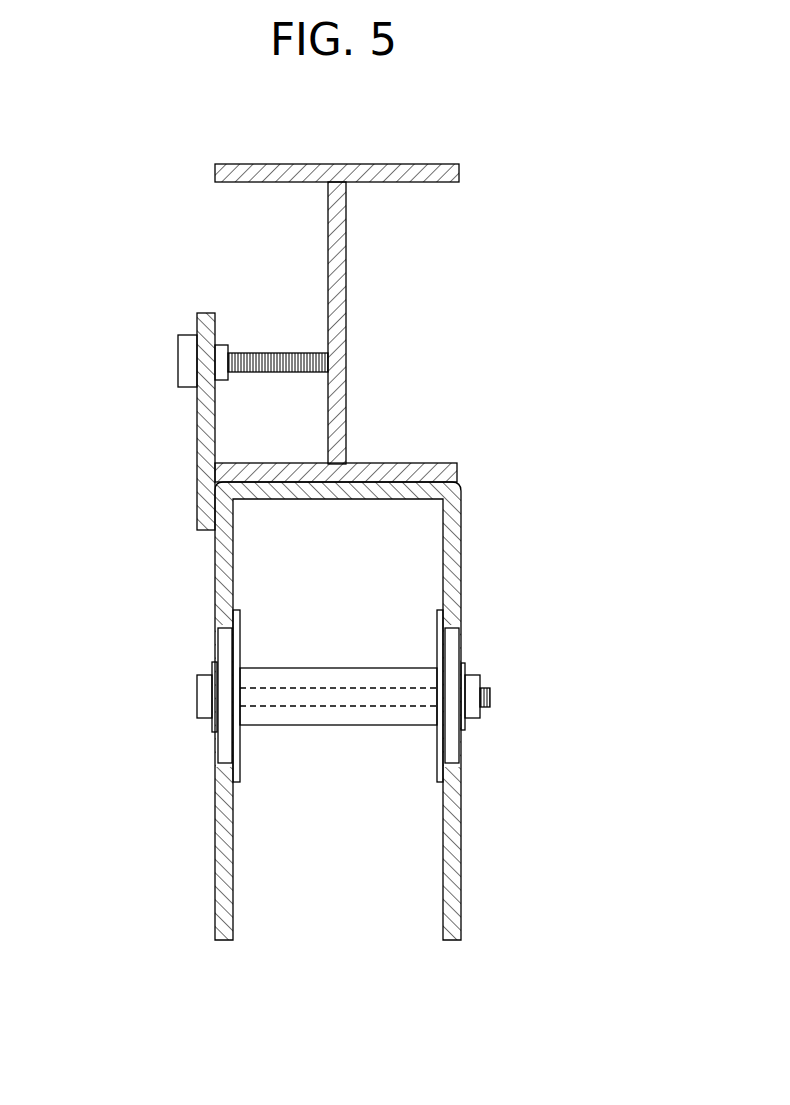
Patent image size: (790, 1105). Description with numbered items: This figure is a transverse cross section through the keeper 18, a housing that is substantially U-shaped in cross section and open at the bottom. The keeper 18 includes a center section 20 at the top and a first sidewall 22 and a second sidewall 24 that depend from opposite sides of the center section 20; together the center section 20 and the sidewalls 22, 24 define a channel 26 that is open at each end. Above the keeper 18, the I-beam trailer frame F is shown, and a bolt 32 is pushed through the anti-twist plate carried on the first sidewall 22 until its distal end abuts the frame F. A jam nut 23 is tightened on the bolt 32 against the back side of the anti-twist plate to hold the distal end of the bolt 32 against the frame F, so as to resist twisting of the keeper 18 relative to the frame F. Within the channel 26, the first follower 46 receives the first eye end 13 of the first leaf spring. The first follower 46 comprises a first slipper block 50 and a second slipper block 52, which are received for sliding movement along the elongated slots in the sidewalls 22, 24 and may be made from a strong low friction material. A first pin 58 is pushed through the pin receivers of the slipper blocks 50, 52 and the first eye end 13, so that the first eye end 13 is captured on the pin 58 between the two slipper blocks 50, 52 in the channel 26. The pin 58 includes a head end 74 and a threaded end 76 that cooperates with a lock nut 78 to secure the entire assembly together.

The I-beam trailer frame F is at (343, 263).
The first eye end 13 is at (328, 670).
The keeper 18 is at (331, 736).
The center section 20 is at (278, 498).
The first sidewall 22 is at (213, 577).
The jam nut 23 is at (222, 345).
The second sidewall 24 is at (455, 852).
The channel 26 is at (313, 872).
The bolt 32 is at (281, 352).
The first follower 46 is at (327, 695).
The first slipper block 50 is at (223, 647).
The second slipper block 52 is at (453, 649).
The first pin 58 is at (118, 707).
The head end 74 is at (202, 699).
The threaded end 76 is at (493, 697).
The lock nut 78 is at (472, 720).